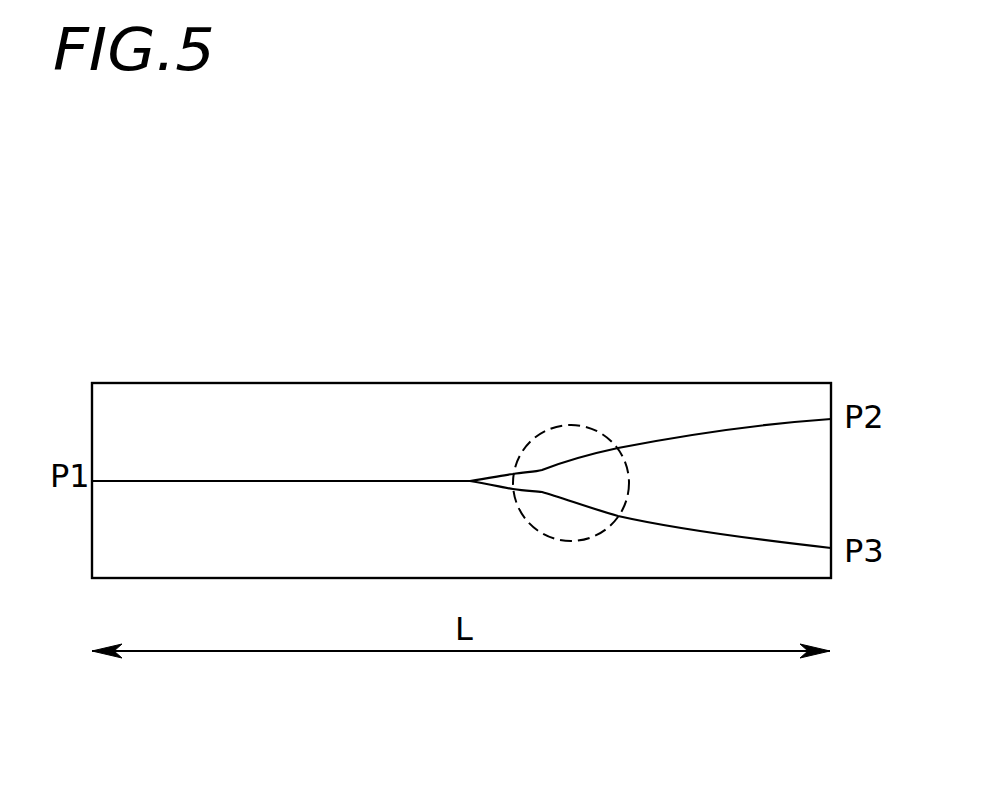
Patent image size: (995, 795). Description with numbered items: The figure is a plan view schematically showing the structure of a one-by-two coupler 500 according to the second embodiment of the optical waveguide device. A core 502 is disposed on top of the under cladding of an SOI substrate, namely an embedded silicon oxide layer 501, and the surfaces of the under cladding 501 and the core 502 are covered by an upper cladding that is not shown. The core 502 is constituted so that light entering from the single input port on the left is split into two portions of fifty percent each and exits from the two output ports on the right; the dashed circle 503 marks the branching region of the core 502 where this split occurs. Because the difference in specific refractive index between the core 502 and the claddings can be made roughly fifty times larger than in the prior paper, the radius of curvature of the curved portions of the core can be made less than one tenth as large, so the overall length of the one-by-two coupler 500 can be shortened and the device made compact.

The 1×2 coupler 500 is at (875, 170).
The embedded silicon oxide layer 501 is at (205, 403).
The core 502 is at (423, 480).
The branching portion 503 is at (572, 426).